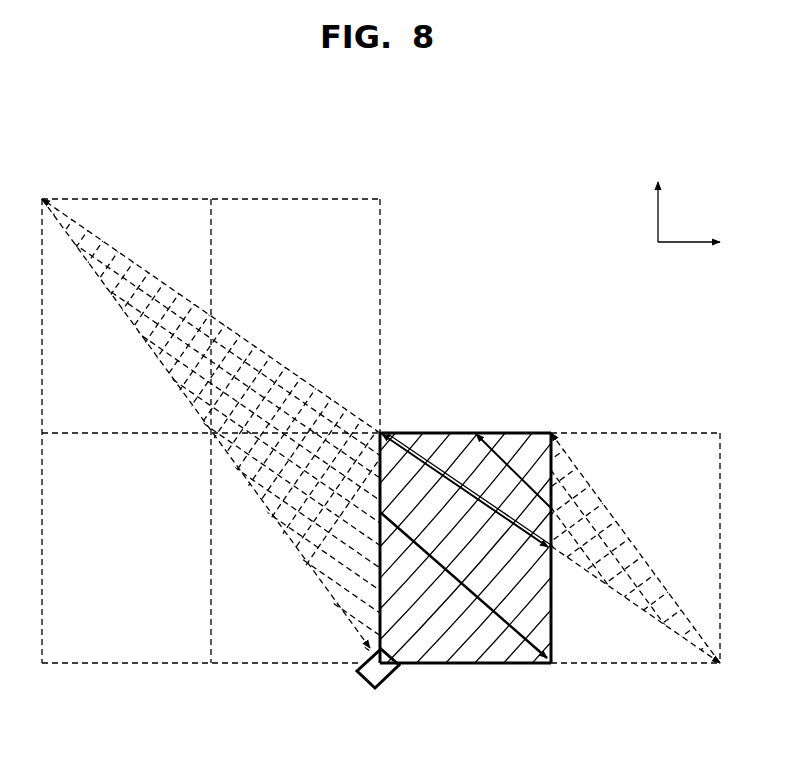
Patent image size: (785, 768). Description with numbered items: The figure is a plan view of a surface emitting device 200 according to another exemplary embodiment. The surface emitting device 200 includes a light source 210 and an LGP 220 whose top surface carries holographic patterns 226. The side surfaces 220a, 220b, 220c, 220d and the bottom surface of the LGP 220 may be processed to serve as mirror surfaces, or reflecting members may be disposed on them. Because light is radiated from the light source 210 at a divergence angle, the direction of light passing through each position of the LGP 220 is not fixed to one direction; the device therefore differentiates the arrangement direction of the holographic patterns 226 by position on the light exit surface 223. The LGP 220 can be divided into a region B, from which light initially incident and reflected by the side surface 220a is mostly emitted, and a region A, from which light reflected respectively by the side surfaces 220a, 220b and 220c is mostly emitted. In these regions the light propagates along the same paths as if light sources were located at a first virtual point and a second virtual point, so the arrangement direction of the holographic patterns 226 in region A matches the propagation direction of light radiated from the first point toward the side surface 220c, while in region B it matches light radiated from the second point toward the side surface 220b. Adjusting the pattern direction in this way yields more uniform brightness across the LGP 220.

The surface emitting device 200 is at (566, 304).
The light source 210 is at (379, 689).
The LGP 220 is at (476, 429).
The side surface 220a is at (553, 637).
The side surface 220b is at (436, 432).
The side surface 220c is at (380, 600).
The side surface 220d is at (517, 664).
The light exit surface 223 is at (513, 580).
The holographic patterns 226 is at (521, 432).